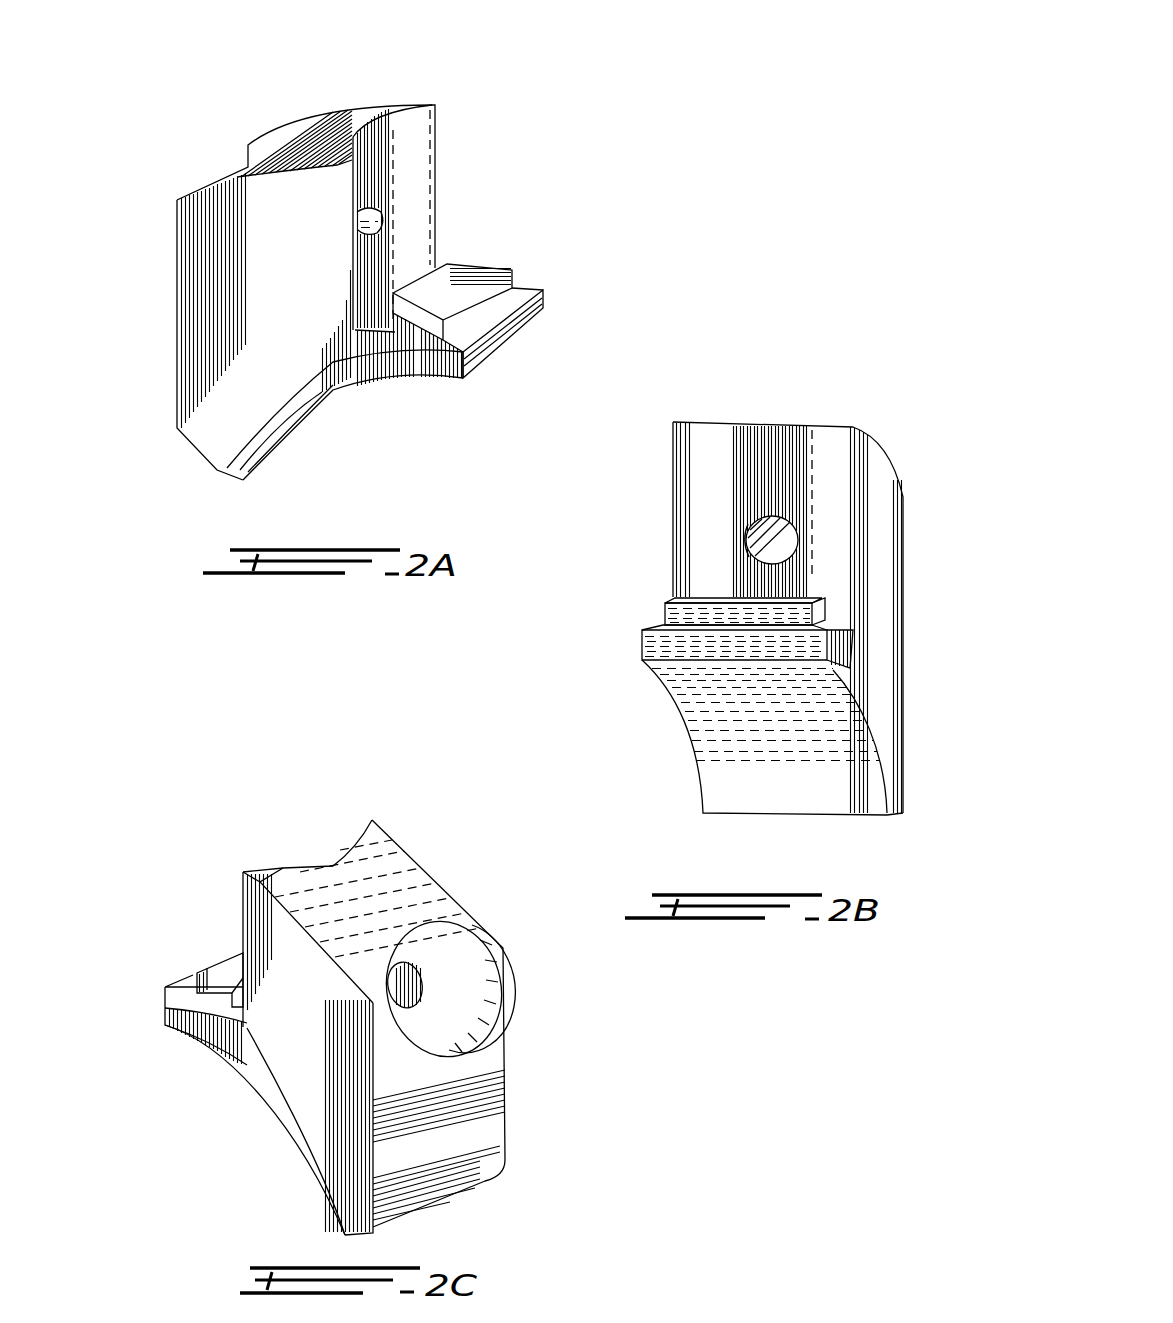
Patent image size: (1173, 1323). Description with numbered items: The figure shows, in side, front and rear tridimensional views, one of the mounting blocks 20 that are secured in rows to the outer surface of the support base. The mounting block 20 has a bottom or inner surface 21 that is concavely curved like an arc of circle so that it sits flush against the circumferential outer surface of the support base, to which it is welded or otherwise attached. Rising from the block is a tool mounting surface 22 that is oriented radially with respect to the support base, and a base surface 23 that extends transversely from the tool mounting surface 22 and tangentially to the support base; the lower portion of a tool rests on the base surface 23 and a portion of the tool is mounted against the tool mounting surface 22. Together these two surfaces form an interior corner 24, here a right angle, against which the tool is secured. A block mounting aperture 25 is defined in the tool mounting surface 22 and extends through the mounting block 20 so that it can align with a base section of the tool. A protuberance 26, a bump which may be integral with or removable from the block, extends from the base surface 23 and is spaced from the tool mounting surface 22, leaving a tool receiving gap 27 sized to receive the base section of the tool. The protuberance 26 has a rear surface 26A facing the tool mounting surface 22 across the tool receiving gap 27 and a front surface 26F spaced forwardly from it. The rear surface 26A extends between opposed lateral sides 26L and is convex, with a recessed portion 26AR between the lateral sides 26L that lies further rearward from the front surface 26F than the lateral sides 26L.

In FIG. 2A, the mounting block 20 is at (240, 106).
In FIG. 2B, the mounting block 20 is at (913, 433).
In FIG. 2C, the mounting block 20 is at (540, 1054).
In FIG. 2A, the inner surface 21 is at (297, 432).
In FIG. 2B, the inner surface 21 is at (792, 768).
In FIG. 2C, the inner surface 21 is at (206, 1026).
In FIG. 2A, the tool mounting surface 22 is at (392, 142).
In FIG. 2B, the tool mounting surface 22 is at (712, 447).
In FIG. 2A, the base surface 23 is at (527, 290).
In FIG. 2B, the base surface 23 is at (653, 630).
In FIG. 2C, the base surface 23 is at (184, 985).
In FIG. 2B, the interior corner 24 is at (872, 626).
In FIG. 2C, the interior corner 24 is at (247, 1042).
In FIG. 2A, the block mounting aperture 25 is at (370, 221).
In FIG. 2B, the block mounting aperture 25 is at (793, 538).
In FIG. 2C, the block mounting aperture 25 is at (455, 955).
In FIG. 2A, the protuberance 26 is at (474, 266).
In FIG. 2B, the protuberance 26 is at (687, 600).
In FIG. 2C, the protuberance 26 is at (228, 962).
In FIG. 2A, the rear surface 26A is at (355, 285).
In FIG. 2C, the rear surface 26A is at (203, 1023).
In FIG. 2A, the recessed portion 26AR is at (396, 274).
In FIG. 2A, the front surface 26F is at (478, 301).
In FIG. 2B, the front surface 26F is at (800, 621).
In FIG. 2A, the lateral sides 26L is at (504, 267).
In FIG. 2B, the lateral sides 26L is at (665, 606).
In FIG. 2C, the lateral sides 26L is at (210, 990).
In FIG. 2A, the tool receiving gap 27 is at (401, 262).